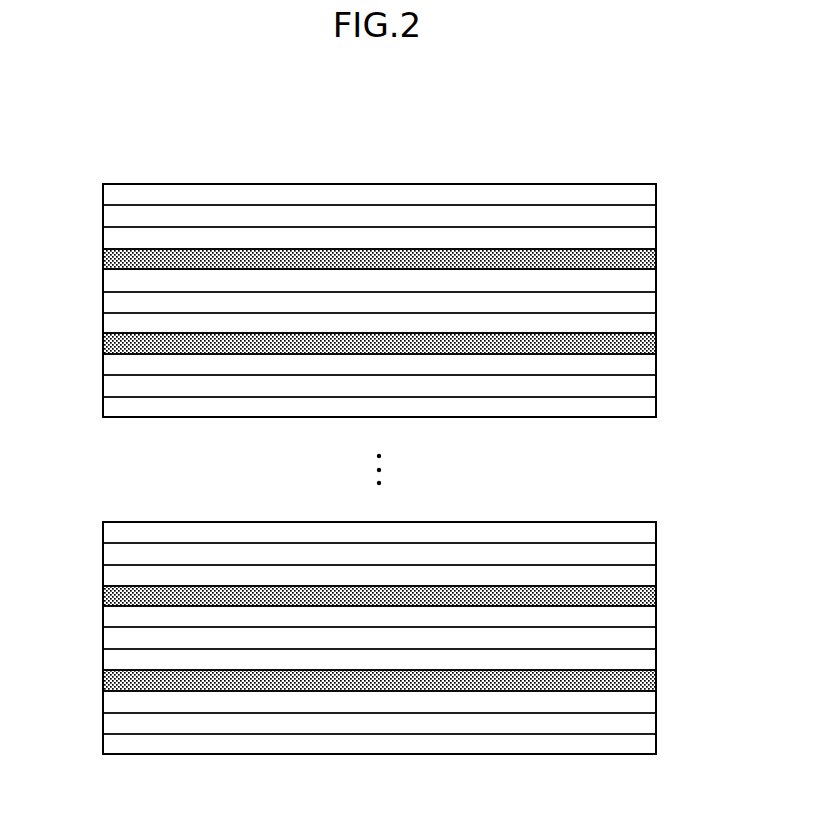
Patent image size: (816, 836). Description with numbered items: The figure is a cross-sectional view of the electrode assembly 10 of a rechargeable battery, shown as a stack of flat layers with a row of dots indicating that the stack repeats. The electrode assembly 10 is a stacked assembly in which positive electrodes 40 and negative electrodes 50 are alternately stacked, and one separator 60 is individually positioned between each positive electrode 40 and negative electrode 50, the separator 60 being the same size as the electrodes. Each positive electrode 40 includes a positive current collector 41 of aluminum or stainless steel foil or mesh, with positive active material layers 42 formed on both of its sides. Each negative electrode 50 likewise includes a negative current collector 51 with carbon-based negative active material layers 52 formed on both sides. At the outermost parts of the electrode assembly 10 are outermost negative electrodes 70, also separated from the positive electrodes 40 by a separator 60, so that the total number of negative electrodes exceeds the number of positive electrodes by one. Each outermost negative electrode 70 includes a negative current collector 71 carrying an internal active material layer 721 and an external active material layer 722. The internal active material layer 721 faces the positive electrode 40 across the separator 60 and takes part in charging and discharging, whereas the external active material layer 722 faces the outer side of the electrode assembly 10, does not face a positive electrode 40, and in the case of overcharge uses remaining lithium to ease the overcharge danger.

The electrode assembly 10 is at (389, 139).
The positive electrode 40 is at (46, 262).
The positive current collector 41 is at (115, 303).
The positive active material layer 42 is at (115, 282).
The negative electrode 50 is at (715, 342).
The negative current collector 51 is at (647, 385).
The negative active material layer 52 is at (647, 362).
The separator 60 is at (648, 258).
The outermost negative electrode 70 is at (715, 170).
The negative current collector 71 is at (647, 215).
The internal active material layer 721 is at (647, 238).
The external active material layer 722 is at (647, 195).